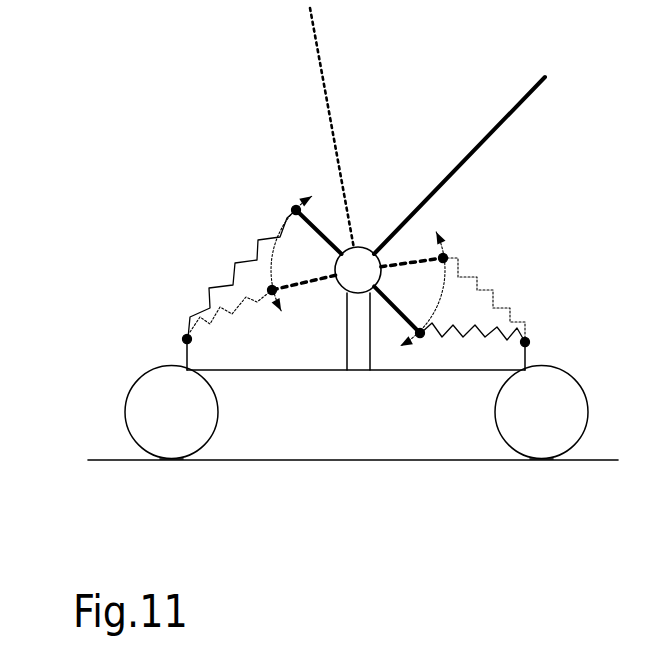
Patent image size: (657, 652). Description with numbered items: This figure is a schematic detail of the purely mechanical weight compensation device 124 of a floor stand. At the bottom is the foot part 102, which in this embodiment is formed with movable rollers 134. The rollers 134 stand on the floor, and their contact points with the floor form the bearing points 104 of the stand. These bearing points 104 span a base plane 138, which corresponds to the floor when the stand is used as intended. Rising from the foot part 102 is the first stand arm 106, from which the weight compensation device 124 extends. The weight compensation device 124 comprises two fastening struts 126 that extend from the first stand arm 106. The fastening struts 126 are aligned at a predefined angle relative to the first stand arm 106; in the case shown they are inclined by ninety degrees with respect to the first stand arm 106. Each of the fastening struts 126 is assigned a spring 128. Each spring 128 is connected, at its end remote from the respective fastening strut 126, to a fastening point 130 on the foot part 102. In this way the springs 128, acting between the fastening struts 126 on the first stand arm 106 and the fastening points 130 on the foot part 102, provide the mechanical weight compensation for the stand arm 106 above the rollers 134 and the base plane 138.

The foot part 102 is at (345, 338).
The bearing points 104 is at (167, 462).
The first stand arm 106 is at (505, 115).
The weight compensation device 124 is at (493, 225).
The fastening struts 126 is at (328, 198).
The spring 128 is at (247, 262).
The fastening point 130 is at (183, 337).
The rollers 134 is at (140, 418).
The base plane 138 is at (370, 462).